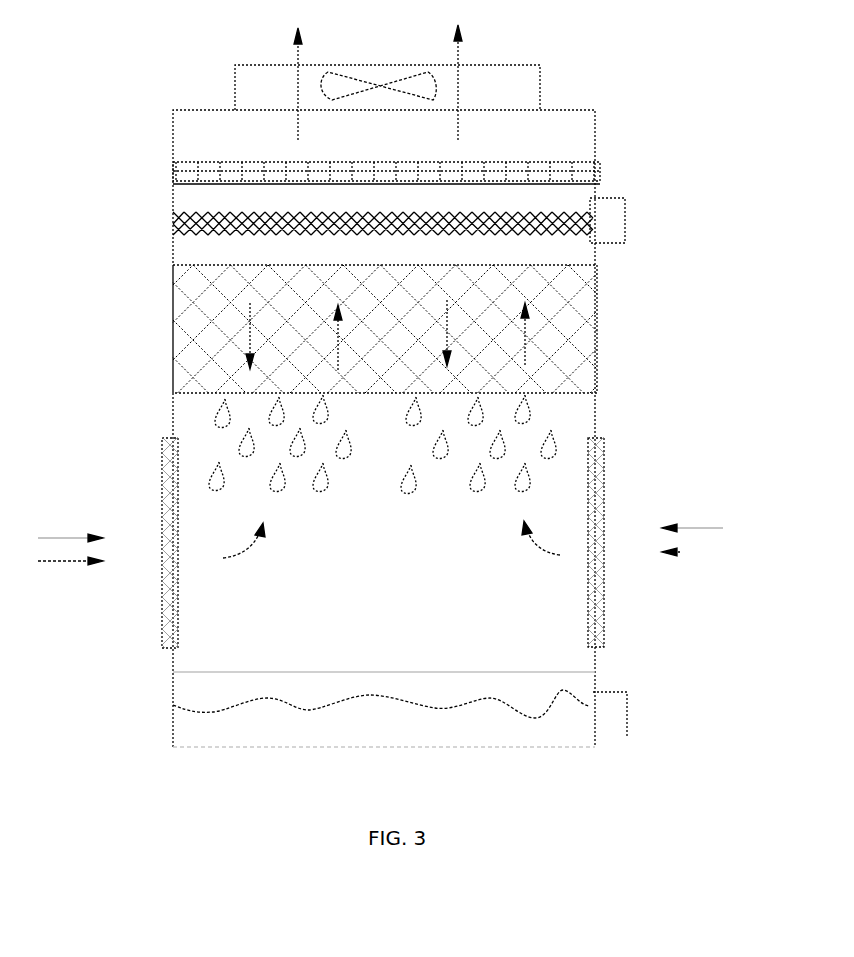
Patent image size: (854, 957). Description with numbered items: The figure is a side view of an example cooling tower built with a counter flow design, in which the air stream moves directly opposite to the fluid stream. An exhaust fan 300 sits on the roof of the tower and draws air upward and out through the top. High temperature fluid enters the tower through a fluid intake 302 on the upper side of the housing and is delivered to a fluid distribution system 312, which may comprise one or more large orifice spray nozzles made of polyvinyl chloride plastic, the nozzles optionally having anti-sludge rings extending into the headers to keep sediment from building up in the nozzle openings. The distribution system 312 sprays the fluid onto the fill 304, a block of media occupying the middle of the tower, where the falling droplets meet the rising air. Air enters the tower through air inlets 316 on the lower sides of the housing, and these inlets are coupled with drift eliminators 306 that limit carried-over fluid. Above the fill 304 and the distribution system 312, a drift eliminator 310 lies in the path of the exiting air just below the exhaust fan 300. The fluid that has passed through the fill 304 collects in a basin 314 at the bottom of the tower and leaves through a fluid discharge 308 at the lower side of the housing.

The exhaust fan 300 is at (390, 82).
The fluid intake 302 is at (607, 220).
The fill 304 is at (590, 330).
The drift eliminators 306 is at (597, 538).
The fluid discharge 308 is at (627, 712).
The drift eliminator 310 is at (172, 172).
The fluid distribution system 312 is at (172, 227).
The basin 314 is at (173, 705).
The air inlets 316 is at (597, 438).